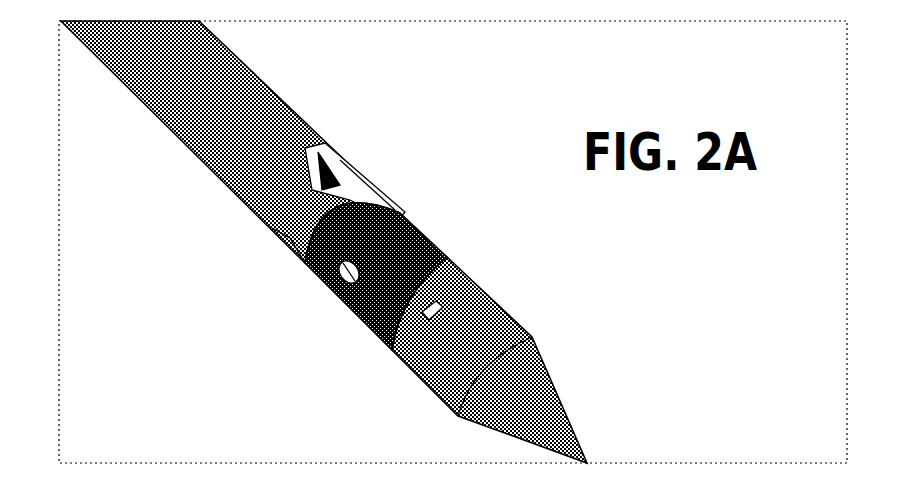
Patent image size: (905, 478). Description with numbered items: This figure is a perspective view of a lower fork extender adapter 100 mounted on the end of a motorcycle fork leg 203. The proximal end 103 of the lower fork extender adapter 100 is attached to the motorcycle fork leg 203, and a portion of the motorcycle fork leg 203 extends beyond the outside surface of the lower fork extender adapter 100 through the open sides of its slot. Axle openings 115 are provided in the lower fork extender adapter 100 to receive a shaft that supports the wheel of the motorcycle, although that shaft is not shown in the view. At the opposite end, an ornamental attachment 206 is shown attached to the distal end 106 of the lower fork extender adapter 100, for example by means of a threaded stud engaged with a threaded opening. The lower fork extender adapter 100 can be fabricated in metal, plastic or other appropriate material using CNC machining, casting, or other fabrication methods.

The lower fork extender adapter 100 is at (435, 216).
The motorcycle fork leg 203 is at (298, 93).
The ornamental attachment 206 is at (521, 299).
The proximal end 103 is at (301, 287).
The distal end 106 is at (387, 368).
The axle openings 115 is at (346, 299).